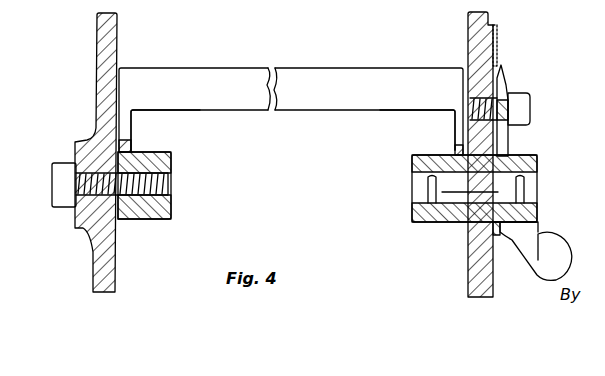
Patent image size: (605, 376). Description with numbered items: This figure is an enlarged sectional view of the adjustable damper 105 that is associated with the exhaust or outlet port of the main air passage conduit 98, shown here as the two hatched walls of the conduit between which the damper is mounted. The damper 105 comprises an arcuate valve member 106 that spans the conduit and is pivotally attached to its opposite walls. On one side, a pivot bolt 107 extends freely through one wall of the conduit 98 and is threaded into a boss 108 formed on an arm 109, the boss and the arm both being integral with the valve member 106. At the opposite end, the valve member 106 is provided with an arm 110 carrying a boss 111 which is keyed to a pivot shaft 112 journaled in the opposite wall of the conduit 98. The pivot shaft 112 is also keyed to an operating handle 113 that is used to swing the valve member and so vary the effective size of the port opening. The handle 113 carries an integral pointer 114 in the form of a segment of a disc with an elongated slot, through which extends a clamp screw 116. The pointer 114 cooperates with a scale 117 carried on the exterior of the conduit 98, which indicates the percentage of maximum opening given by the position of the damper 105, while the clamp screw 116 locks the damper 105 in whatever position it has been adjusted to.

The main air passage conduit 98 is at (112, 41).
The damper 105 is at (538, 149).
The arcuate valve member 106 is at (323, 79).
The pivot bolt 107 is at (62, 163).
The boss 108 is at (171, 159).
The arm 109 is at (125, 126).
The arm 110 is at (452, 127).
The boss 111 is at (418, 162).
The pivot shaft 112 is at (458, 196).
The operating handle 113 is at (552, 262).
The pointer 114 is at (506, 80).
The clamp screw 116 is at (522, 106).
The scale 117 is at (498, 43).